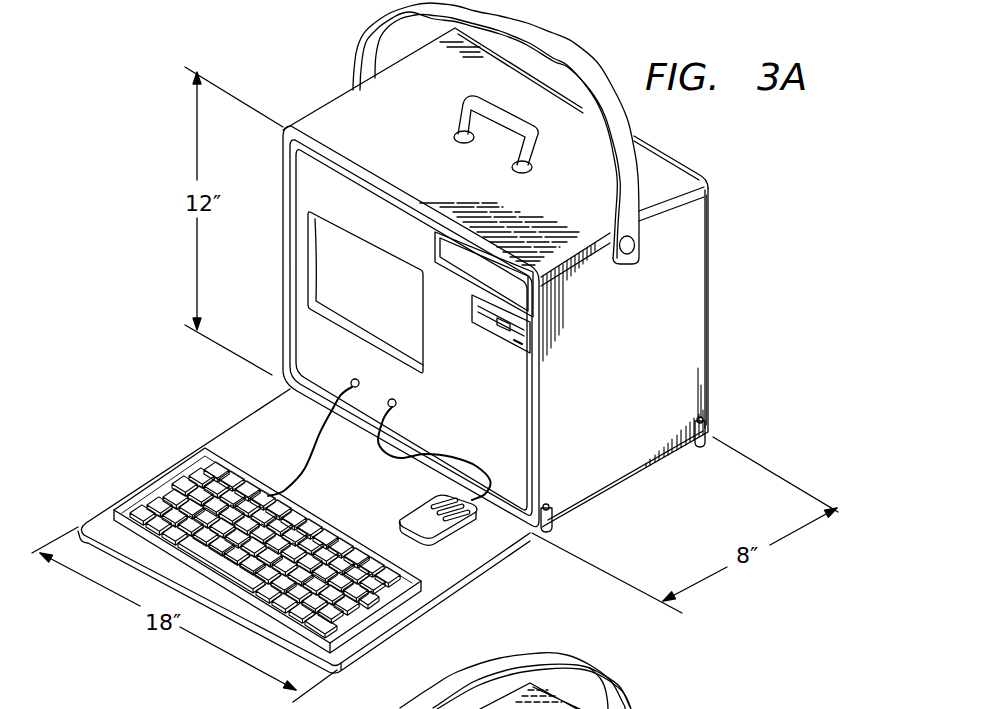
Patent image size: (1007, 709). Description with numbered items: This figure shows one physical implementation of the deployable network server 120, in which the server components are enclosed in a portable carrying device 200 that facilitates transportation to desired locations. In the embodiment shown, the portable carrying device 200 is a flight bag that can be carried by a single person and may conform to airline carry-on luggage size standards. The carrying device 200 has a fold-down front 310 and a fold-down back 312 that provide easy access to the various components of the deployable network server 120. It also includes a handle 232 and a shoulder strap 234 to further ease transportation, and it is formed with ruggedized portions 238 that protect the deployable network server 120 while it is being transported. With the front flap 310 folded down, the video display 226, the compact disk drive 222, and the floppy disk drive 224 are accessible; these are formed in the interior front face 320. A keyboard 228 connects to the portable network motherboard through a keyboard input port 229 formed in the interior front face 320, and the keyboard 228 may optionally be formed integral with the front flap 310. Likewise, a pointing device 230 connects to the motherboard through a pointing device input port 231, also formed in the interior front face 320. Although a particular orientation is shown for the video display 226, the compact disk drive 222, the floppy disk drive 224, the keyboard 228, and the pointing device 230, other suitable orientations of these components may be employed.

The deployable network server 120 is at (643, 492).
The portable carrying device 200 is at (662, 163).
The compact disk drive 222 is at (448, 250).
The floppy disk drive 224 is at (487, 327).
The video display 226 is at (327, 281).
The keyboard 228 is at (237, 470).
The keyboard input port 229 is at (353, 382).
The pointing device 230 is at (415, 515).
The pointing device input port 231 is at (398, 408).
The handle 232 is at (465, 118).
The shoulder strap 234 is at (572, 57).
The ruggedized portions 238 is at (553, 522).
The fold-down front 310 is at (457, 561).
The fold-down back 312 is at (708, 317).
The interior front face 320 is at (517, 400).